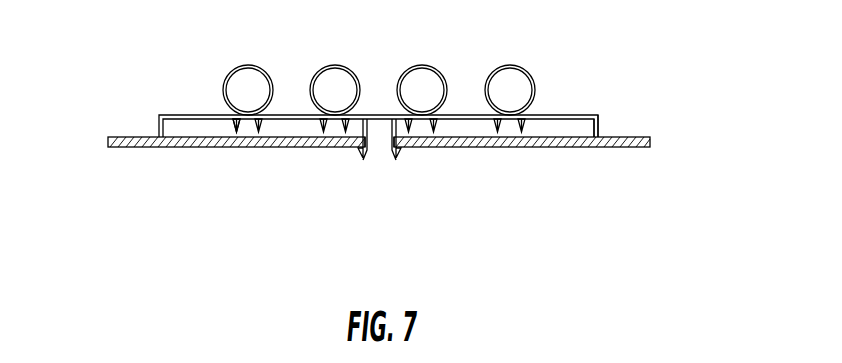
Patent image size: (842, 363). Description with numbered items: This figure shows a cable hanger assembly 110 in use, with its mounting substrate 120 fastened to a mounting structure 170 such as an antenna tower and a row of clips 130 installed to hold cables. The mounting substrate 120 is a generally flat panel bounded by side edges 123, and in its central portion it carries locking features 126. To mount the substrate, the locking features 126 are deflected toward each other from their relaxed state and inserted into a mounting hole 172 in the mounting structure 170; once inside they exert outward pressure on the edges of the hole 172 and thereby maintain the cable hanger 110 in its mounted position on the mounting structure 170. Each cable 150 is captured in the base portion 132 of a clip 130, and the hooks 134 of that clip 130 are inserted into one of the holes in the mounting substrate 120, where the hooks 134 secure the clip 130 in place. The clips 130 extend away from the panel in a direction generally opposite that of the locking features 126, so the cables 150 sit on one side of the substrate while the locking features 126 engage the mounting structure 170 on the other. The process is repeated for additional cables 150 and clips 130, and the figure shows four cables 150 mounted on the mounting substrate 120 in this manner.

The cable hanger assembly 110 is at (694, 72).
The mounting substrate 120 is at (90, 108).
The side edge 123 is at (573, 114).
The locking feature 126 is at (398, 158).
The clip 130 is at (258, 66).
The base portion 132 is at (238, 66).
The hook 134 is at (236, 128).
The cable 150 is at (245, 94).
The mounting structure 170 is at (118, 149).
The mounting hole 172 is at (375, 165).